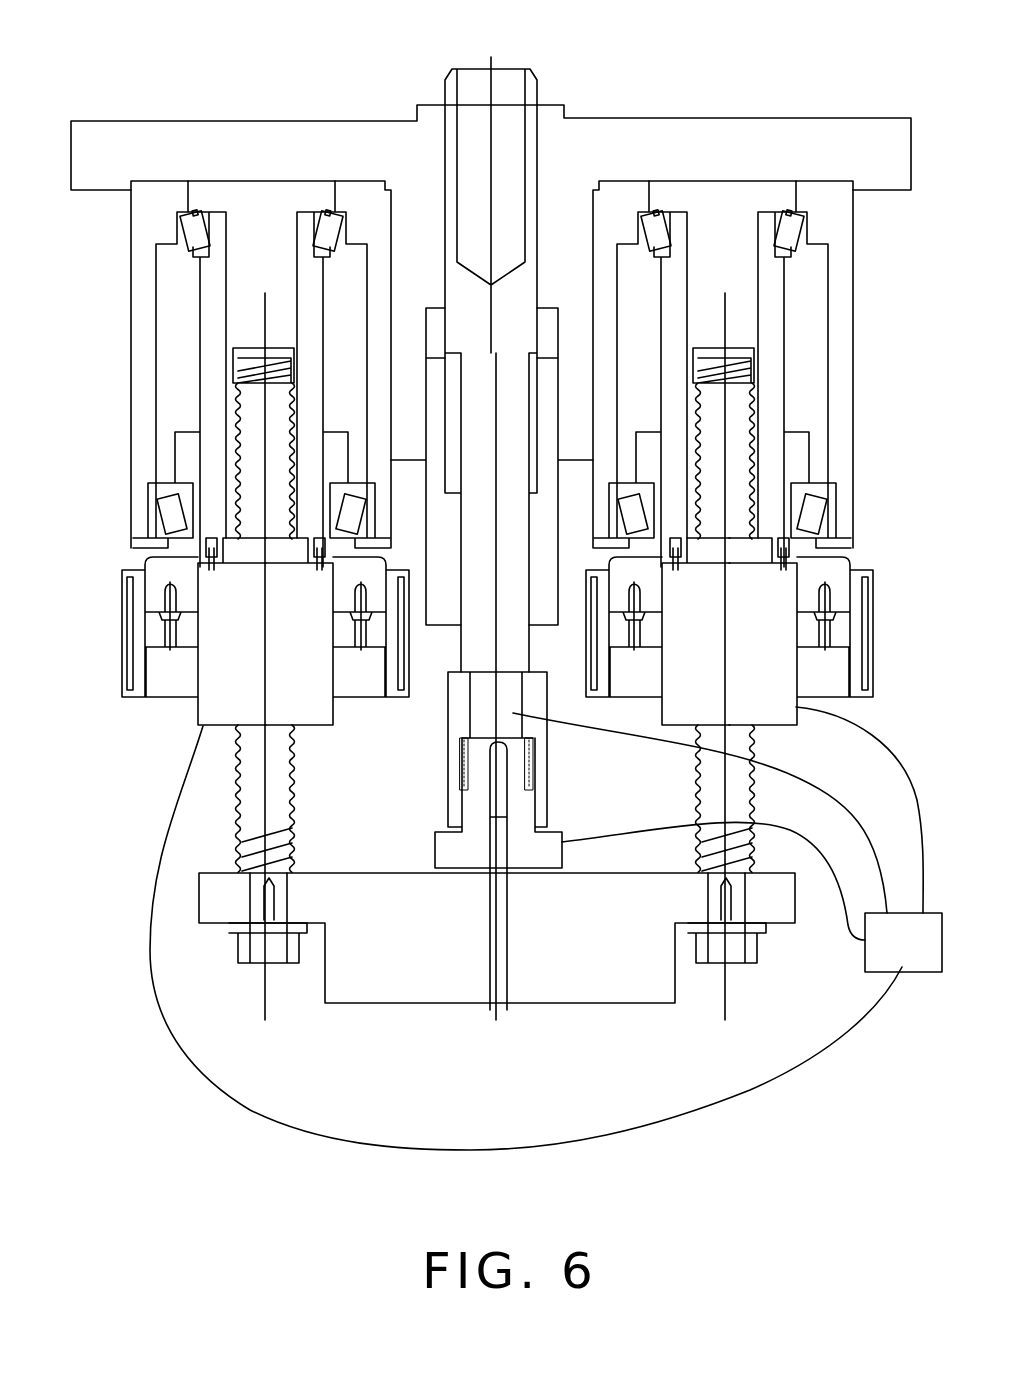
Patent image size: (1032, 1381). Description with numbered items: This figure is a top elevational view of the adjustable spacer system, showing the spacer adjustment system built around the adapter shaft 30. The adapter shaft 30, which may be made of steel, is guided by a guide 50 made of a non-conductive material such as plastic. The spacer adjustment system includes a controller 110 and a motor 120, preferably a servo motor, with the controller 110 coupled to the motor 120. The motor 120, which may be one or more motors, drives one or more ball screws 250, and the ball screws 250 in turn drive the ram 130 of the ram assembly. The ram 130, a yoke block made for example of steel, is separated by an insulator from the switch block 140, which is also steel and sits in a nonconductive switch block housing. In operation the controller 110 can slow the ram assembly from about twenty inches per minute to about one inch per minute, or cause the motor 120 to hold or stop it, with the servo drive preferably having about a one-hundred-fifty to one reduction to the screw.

The adapter shaft 30 is at (463, 293).
The guide 50 is at (446, 610).
The controller 110 is at (546, 928).
The motor 120 is at (112, 565).
The ram 130 is at (407, 975).
The switch block 140 is at (452, 848).
The ball screw 250 is at (737, 448).